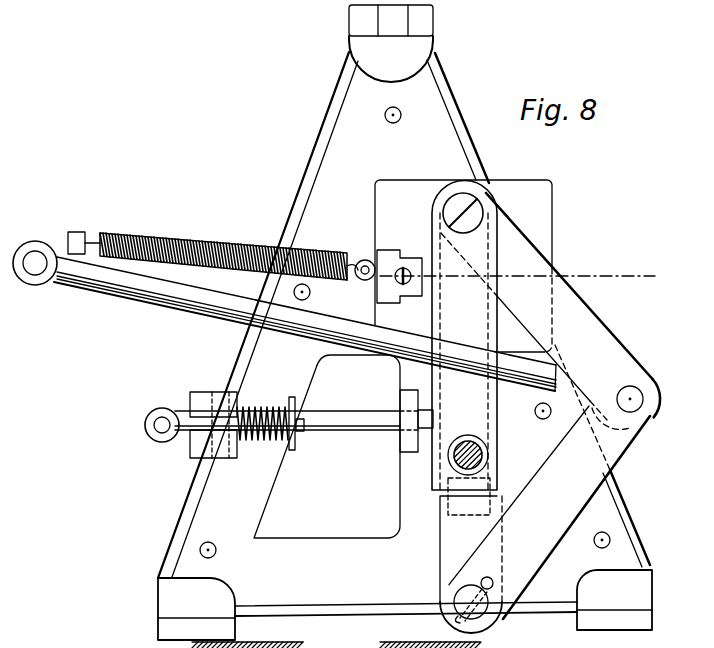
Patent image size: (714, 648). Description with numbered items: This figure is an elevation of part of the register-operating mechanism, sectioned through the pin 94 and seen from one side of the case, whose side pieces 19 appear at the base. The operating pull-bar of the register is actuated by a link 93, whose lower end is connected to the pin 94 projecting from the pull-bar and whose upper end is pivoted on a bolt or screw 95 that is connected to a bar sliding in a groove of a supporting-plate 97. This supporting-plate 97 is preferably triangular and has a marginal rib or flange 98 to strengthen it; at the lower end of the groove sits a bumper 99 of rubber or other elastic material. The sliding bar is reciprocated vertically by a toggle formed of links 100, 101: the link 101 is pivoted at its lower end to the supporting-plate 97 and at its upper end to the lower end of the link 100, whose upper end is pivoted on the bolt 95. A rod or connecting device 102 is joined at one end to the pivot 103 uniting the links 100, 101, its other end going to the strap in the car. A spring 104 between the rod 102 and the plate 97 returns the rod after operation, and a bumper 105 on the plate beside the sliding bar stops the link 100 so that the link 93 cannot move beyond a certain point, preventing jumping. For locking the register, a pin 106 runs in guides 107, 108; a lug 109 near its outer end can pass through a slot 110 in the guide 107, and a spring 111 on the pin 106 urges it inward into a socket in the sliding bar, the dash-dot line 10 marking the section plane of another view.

The axis line / reference 10 is at (346, 291).
The side pieces 19 is at (383, 647).
The link 93 is at (463, 335).
The pin 94 is at (455, 465).
The bolt or screw 95 is at (472, 216).
The supporting-plate 97 is at (327, 466).
The marginal rib or flange 98 is at (317, 149).
The bumper 99 is at (462, 497).
The link 100 is at (592, 337).
The link 101 is at (545, 519).
The rod or connecting device 102 is at (190, 309).
The pivot 103 is at (648, 399).
The spring 104 is at (194, 241).
The bumper 105 is at (412, 258).
The pin 106 is at (352, 435).
The guide 107 is at (225, 451).
The guide 108 is at (408, 446).
The lug 109 is at (188, 442).
The slot 110 is at (235, 420).
The spring 111 is at (292, 412).